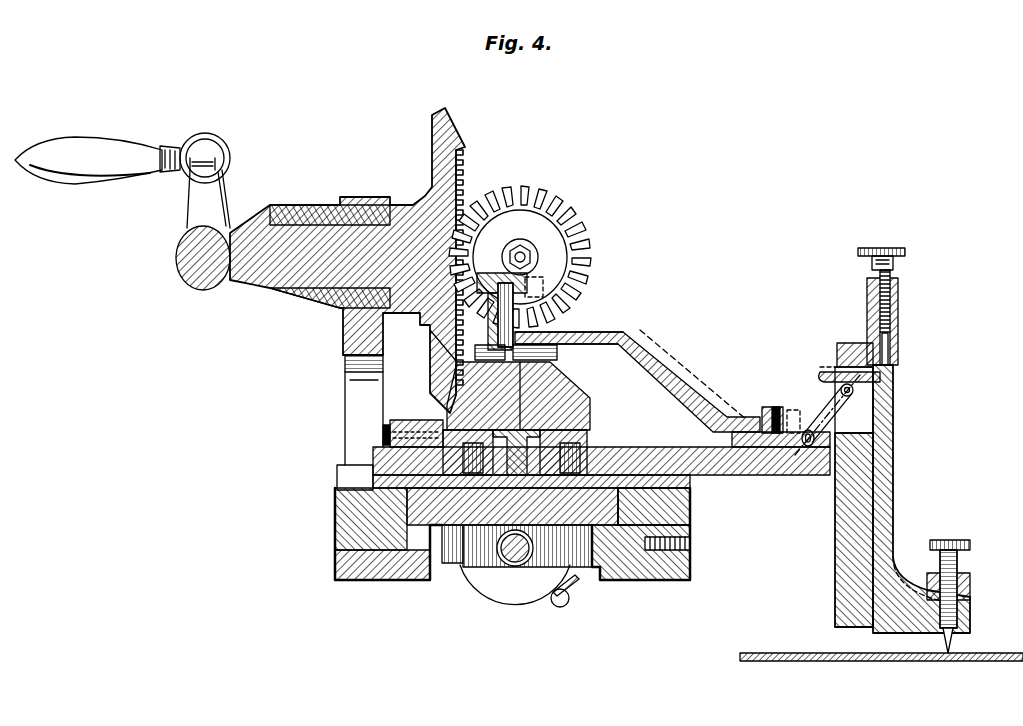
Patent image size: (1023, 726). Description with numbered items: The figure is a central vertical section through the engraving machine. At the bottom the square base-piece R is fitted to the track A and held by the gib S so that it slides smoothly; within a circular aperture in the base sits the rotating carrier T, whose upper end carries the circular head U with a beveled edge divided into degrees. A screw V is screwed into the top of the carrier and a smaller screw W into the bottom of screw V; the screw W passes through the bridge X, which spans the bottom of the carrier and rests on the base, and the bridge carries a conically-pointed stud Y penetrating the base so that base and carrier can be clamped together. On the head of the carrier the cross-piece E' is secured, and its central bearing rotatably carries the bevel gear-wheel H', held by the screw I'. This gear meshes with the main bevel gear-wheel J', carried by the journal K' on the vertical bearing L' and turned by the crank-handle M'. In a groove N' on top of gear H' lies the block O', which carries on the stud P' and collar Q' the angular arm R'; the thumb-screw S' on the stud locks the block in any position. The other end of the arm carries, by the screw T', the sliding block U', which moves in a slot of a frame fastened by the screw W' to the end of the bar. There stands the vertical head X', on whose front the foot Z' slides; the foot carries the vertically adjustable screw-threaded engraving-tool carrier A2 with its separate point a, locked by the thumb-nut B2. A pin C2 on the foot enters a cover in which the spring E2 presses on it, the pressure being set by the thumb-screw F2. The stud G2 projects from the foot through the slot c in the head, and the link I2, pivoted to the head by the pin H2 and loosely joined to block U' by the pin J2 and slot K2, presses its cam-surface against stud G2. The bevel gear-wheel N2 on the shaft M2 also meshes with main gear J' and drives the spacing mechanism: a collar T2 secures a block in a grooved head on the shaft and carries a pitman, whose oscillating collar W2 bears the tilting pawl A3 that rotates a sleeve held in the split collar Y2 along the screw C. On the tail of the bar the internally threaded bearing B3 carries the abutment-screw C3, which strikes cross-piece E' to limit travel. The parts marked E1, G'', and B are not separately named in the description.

The crank-handle M' is at (122, 166).
The journal K' is at (320, 260).
The vertical bearing L' is at (330, 236).
The main bevel gear-wheel J' is at (468, 247).
The internally screw-threaded bearing B3 is at (413, 420).
The abutment-screw C3 is at (383, 433).
The bevel gear-wheel N2 is at (548, 196).
The shaft M2 is at (521, 247).
The stud P' is at (553, 298).
The thumb-screw S' is at (561, 280).
The collar Q' is at (575, 289).
The groove N' is at (529, 355).
The angular arm R' is at (637, 375).
The block O' is at (569, 324).
The bevel gear-wheel H' is at (525, 380).
The cross-piece E' is at (531, 441).
The slide block lower E1 is at (588, 445).
The screw I' is at (619, 433).
The screw V is at (725, 428).
The bed plate G'' is at (570, 465).
The circular head U is at (329, 478).
The track A is at (348, 568).
The rotating carrier T is at (476, 550).
The square base-piece R is at (325, 520).
The split collar Y2 is at (455, 565).
The smaller screw W is at (526, 579).
The screw C is at (508, 565).
The conically-pointed stud Y is at (470, 570).
The oscillating collar W2 is at (560, 607).
The tilting pawl A3 is at (575, 582).
The bridge X is at (602, 612).
The gib S is at (641, 547).
The screw T' is at (781, 414).
The collar T2 is at (795, 420).
The screw W' is at (719, 475).
The base bar B is at (770, 447).
The sliding block U' is at (772, 474).
The pin J2 is at (812, 447).
The link I2 is at (830, 410).
The thumb-nut B2 is at (898, 294).
The spring E2 is at (896, 318).
The pin C2 is at (882, 350).
The thumb-screw F2 is at (889, 244).
The inwardly-projecting stud G2 is at (839, 356).
The pin H2 is at (850, 390).
The slot c is at (854, 400).
The foot Z' is at (880, 530).
The slot K2 is at (893, 465).
The vertical head X' is at (810, 563).
The engraving-tool carrier A2 is at (965, 552).
The point a is at (953, 643).